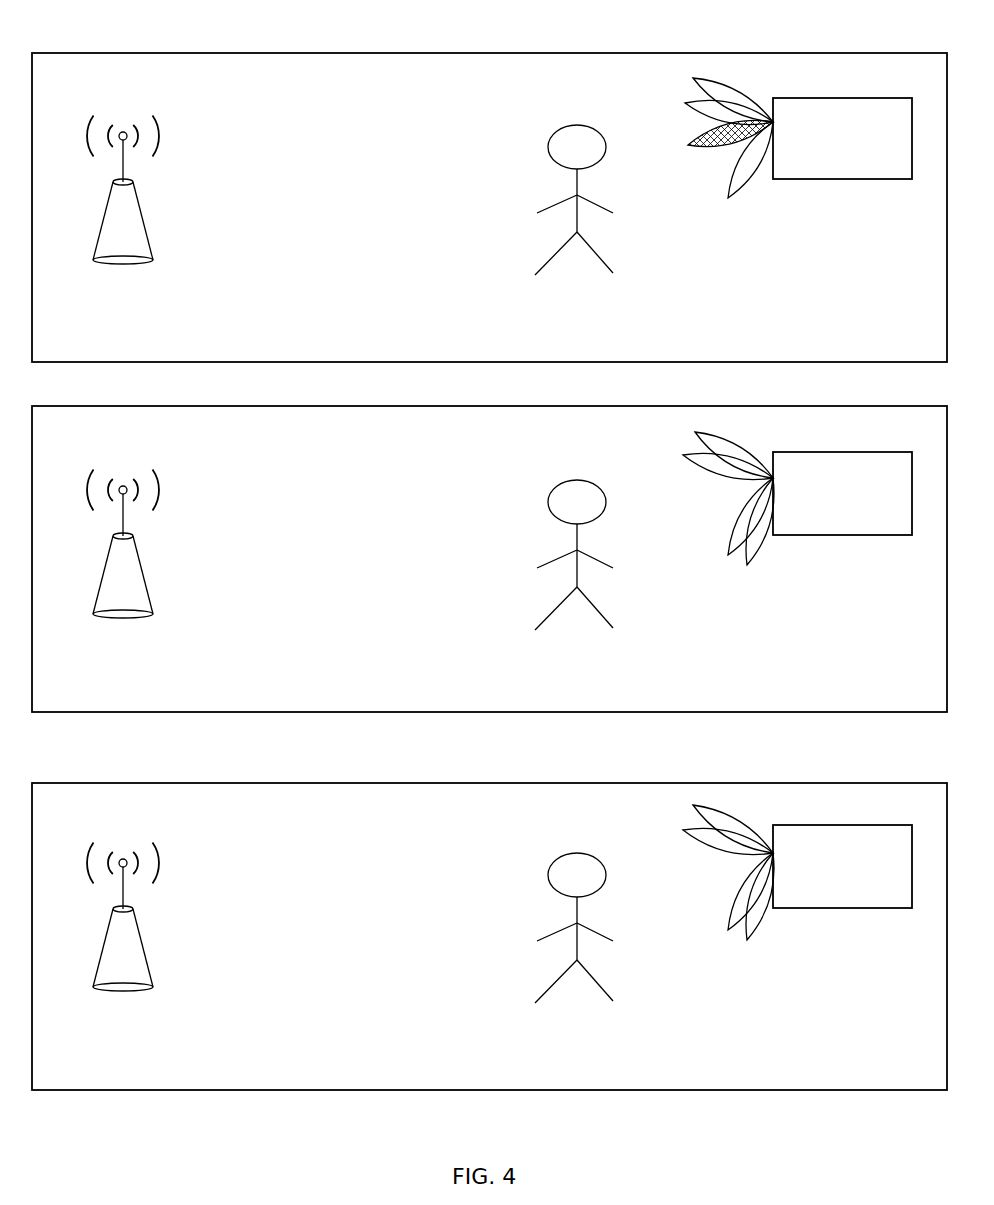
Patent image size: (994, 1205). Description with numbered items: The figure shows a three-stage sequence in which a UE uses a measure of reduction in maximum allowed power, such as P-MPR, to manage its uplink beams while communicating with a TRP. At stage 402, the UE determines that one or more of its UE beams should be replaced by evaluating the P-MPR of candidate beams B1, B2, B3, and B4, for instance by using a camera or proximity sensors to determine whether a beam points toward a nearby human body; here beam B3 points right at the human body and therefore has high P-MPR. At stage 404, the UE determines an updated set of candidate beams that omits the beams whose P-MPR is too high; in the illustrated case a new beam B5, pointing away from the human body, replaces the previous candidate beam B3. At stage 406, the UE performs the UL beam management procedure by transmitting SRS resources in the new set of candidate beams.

The stage 402 is at (438, 329).
The stage 404 is at (438, 683).
The stage 406 is at (438, 1057).